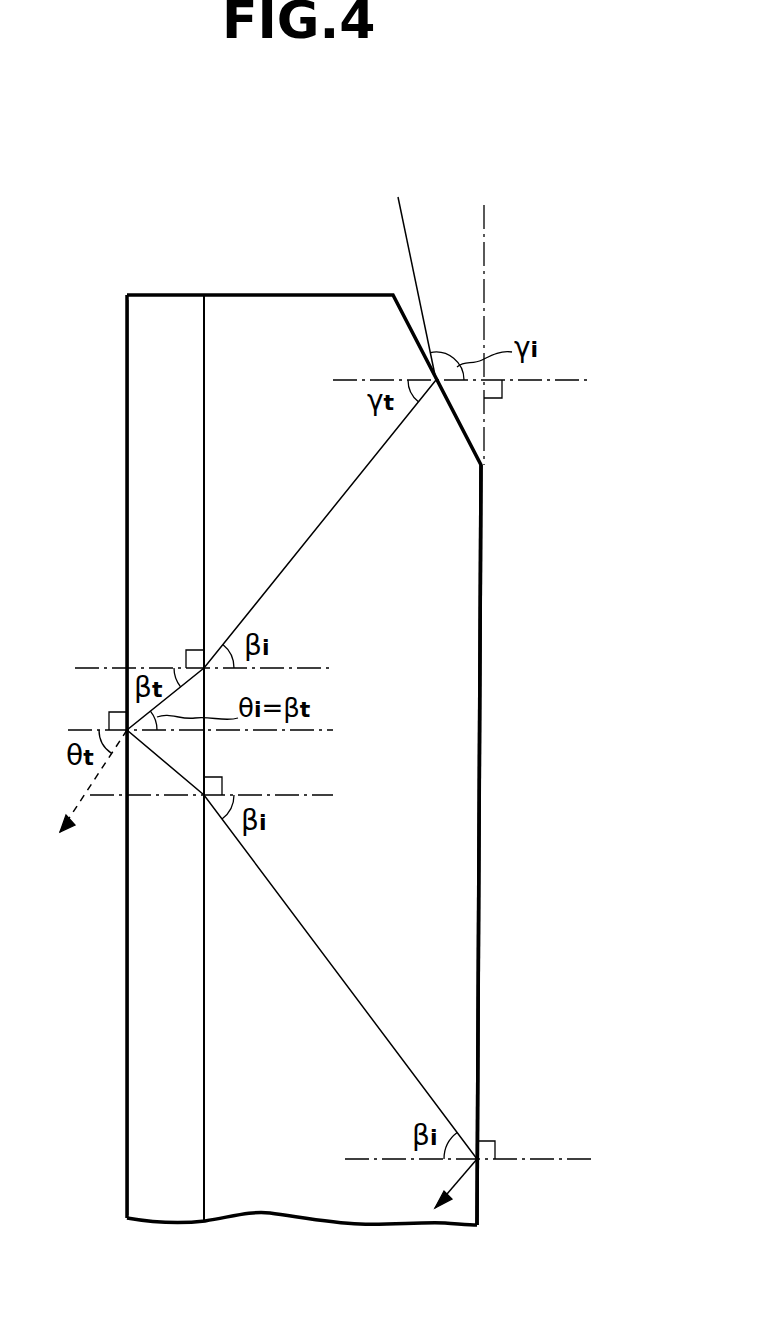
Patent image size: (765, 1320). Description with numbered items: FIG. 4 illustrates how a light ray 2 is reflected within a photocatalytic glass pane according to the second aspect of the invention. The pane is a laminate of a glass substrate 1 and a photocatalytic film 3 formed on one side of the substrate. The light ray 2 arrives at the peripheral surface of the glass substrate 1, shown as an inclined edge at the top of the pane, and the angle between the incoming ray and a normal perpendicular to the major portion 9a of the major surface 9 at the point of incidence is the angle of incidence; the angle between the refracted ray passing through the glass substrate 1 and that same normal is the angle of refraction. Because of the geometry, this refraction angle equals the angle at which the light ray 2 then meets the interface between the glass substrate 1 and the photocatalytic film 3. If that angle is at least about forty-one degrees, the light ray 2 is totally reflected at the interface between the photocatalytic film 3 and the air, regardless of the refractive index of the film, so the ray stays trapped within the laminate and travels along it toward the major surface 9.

The glass substrate 1 is at (277, 316).
The light ray 2 is at (405, 220).
The photocatalytic film 3 is at (135, 428).
The major surface 9 is at (480, 647).
The major portion of the major surface 9a is at (480, 826).